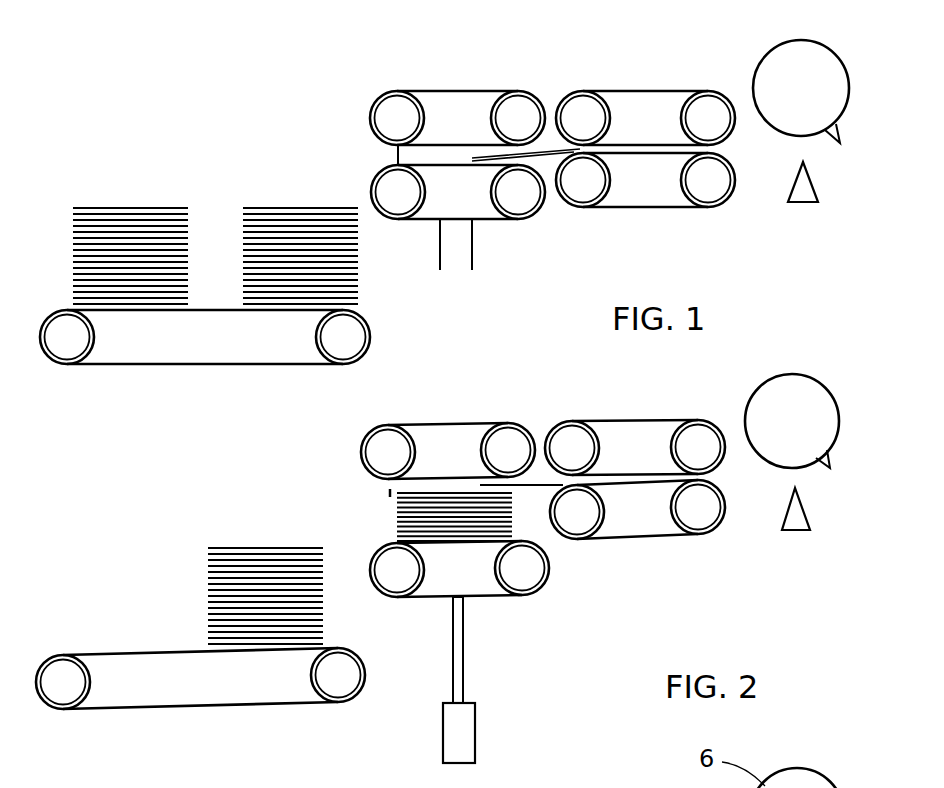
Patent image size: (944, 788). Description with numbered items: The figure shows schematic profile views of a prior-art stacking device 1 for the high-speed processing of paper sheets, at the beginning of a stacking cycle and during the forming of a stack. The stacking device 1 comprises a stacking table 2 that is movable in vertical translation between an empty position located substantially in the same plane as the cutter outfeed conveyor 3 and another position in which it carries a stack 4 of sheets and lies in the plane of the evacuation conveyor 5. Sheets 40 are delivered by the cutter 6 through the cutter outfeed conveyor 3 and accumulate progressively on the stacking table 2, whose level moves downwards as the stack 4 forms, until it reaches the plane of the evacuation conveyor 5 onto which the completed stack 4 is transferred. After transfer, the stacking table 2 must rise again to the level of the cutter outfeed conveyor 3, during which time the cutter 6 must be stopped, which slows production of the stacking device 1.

In FIG. 1, the stacking device 1 is at (190, 134).
In FIG. 2, the stacking device 1 is at (145, 547).
In FIG. 1, the stacking table 2 is at (488, 220).
In FIG. 2, the stacking table 2 is at (490, 600).
In FIG. 1, the cutter outfeed conveyor 3 is at (653, 187).
In FIG. 2, the cutter outfeed conveyor 3 is at (632, 522).
In FIG. 1, the stack of sheets 4 is at (258, 208).
In FIG. 2, the stack of sheets 4 is at (208, 618).
In FIG. 1, the sheet 40 is at (318, 210).
In FIG. 2, the sheet 40 is at (243, 548).
In FIG. 1, the evacuation conveyor 5 is at (137, 350).
In FIG. 2, the evacuation conveyor 5 is at (148, 688).
In FIG. 1, the cutter 6 is at (778, 65).
In FIG. 2, the cutter 6 is at (772, 420).